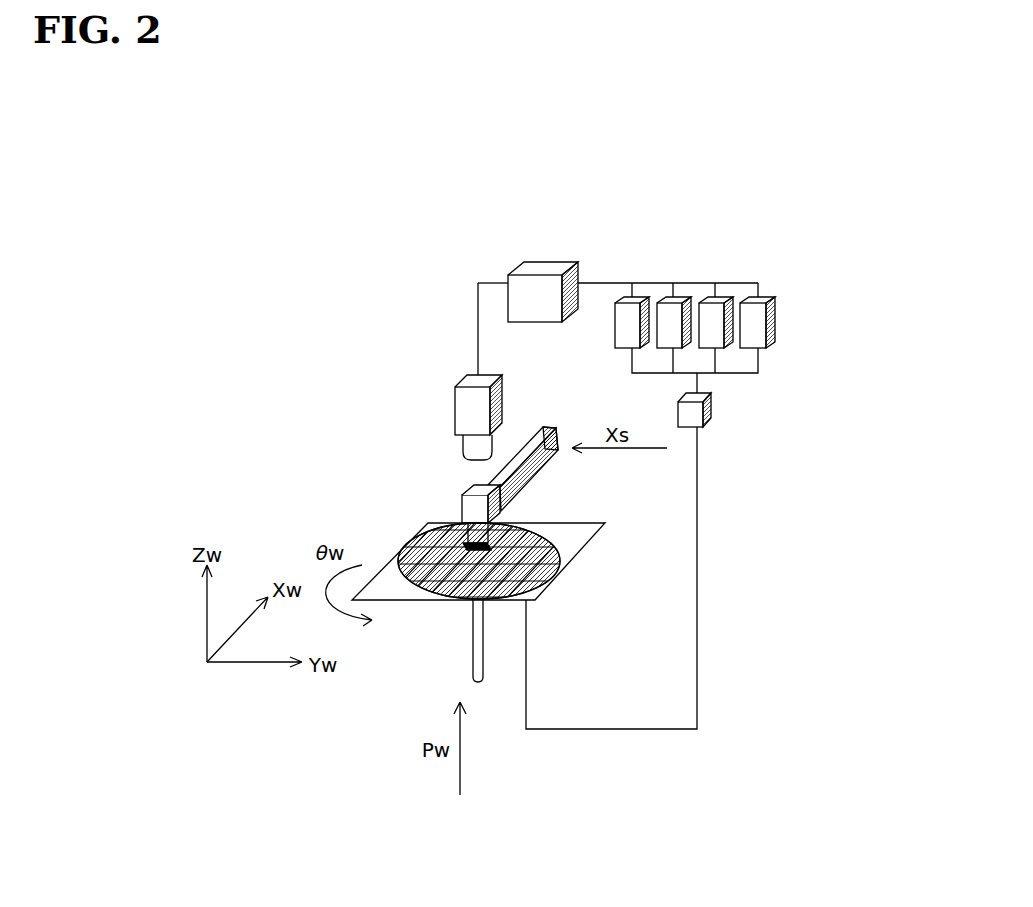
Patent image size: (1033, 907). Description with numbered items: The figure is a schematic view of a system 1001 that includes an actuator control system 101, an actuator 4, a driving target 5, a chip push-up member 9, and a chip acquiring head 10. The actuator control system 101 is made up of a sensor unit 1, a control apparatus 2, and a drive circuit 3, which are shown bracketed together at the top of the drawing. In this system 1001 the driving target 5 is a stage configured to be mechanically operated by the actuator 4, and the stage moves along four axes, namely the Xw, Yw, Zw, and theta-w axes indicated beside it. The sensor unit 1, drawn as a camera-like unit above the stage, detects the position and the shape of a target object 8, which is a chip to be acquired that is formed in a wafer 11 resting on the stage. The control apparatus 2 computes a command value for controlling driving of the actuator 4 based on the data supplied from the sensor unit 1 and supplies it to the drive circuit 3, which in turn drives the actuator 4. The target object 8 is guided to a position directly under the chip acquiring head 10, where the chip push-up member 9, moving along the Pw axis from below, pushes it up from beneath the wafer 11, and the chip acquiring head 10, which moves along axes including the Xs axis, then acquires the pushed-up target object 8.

The system 1001 is at (773, 133).
The actuator control system 101 is at (458, 176).
The sensor unit 1 is at (455, 403).
The control apparatus 2 is at (545, 262).
The drive circuit 3 is at (783, 256).
The actuator 4 is at (711, 412).
The driving target 5 is at (563, 523).
The target object 8 is at (427, 525).
The chip push-up member 9 is at (472, 643).
The chip acquiring head 10 is at (458, 505).
The wafer 11 is at (560, 568).